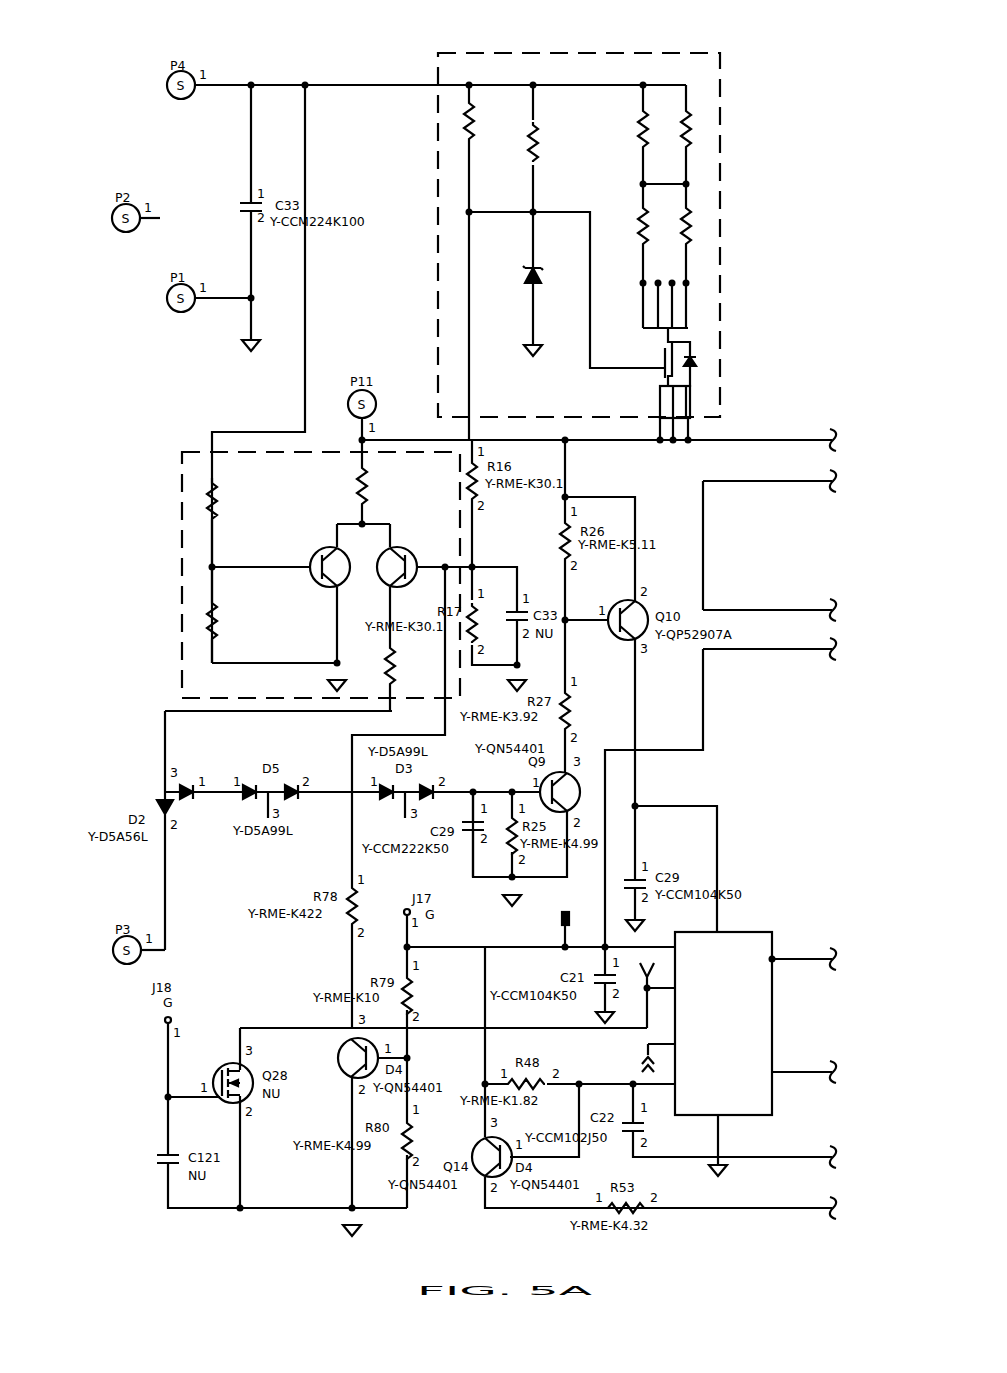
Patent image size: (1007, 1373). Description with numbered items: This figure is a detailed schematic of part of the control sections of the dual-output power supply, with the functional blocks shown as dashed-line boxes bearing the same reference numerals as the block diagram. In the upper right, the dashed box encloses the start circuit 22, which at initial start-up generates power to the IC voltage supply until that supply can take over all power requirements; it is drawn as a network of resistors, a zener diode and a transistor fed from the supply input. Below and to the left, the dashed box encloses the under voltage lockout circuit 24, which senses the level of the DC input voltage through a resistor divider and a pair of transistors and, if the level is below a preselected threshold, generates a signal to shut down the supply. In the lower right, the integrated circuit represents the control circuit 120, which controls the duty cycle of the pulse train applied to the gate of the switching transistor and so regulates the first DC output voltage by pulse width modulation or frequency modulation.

The start circuit 22 is at (488, 73).
The under voltage lockout circuit 24 is at (277, 463).
The control circuit 120 is at (742, 1100).